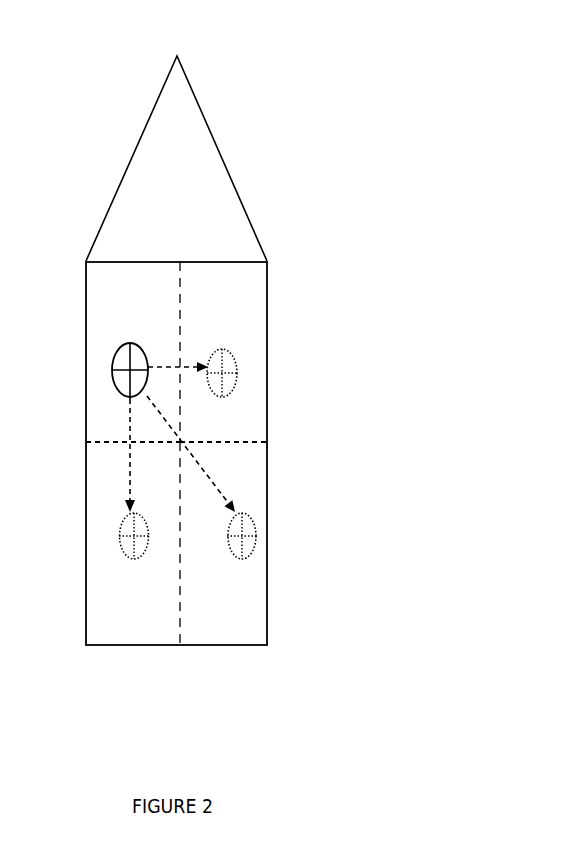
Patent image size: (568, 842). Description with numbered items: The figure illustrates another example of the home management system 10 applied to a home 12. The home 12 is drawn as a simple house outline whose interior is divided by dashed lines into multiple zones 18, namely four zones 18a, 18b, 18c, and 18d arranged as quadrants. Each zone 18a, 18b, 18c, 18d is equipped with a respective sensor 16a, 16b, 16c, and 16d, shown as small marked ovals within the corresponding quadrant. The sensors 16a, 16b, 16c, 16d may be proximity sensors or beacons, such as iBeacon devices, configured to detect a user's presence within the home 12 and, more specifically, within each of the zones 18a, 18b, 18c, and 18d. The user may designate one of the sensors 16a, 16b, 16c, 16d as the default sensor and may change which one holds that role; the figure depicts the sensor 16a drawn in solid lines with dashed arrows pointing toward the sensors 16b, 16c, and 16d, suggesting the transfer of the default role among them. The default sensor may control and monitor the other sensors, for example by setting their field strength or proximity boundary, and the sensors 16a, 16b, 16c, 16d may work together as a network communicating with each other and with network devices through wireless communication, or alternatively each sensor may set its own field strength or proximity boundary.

The home management system 10 is at (459, 114).
The home 12 is at (268, 315).
The sensor 16a is at (127, 343).
The sensor 16b is at (142, 558).
The sensor 16c is at (228, 349).
The sensor 16d is at (237, 558).
The zones 18 is at (86, 310).
The zone 18a is at (105, 413).
The zone 18b is at (106, 583).
The zone 18c is at (255, 413).
The zone 18d is at (255, 607).